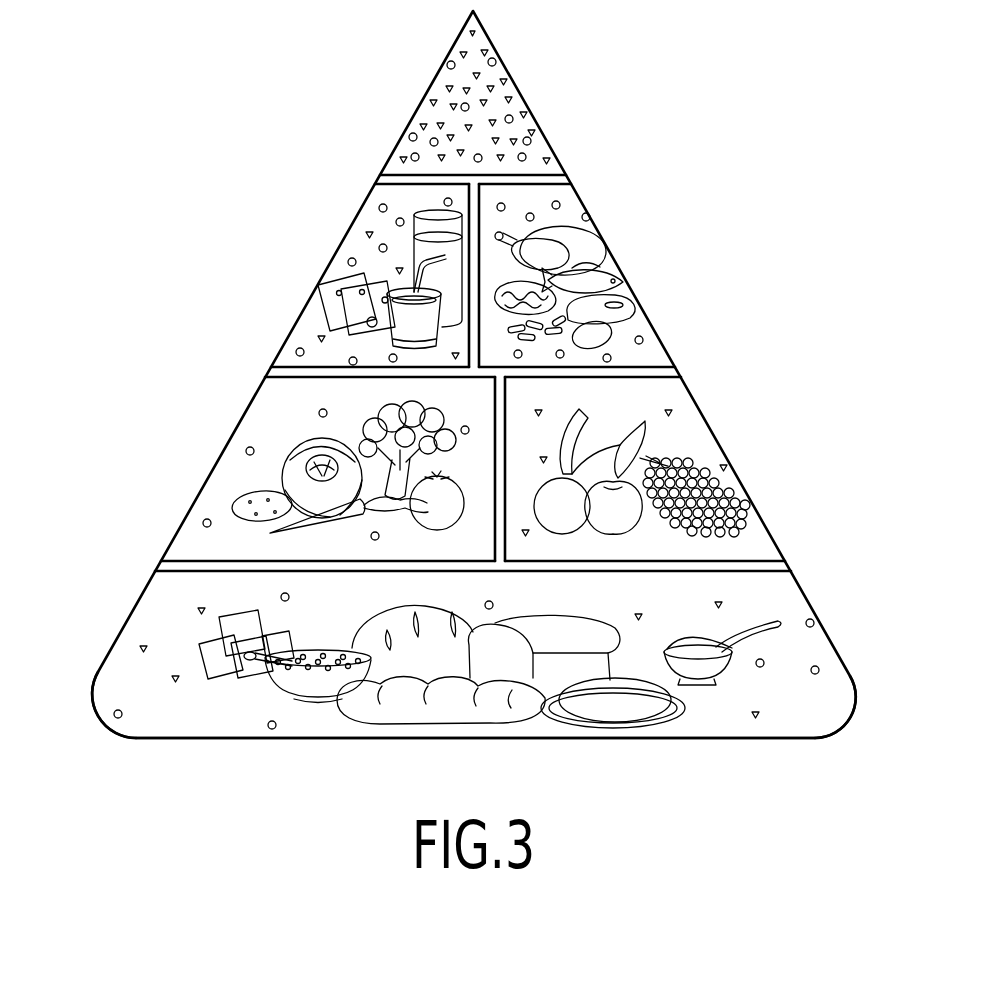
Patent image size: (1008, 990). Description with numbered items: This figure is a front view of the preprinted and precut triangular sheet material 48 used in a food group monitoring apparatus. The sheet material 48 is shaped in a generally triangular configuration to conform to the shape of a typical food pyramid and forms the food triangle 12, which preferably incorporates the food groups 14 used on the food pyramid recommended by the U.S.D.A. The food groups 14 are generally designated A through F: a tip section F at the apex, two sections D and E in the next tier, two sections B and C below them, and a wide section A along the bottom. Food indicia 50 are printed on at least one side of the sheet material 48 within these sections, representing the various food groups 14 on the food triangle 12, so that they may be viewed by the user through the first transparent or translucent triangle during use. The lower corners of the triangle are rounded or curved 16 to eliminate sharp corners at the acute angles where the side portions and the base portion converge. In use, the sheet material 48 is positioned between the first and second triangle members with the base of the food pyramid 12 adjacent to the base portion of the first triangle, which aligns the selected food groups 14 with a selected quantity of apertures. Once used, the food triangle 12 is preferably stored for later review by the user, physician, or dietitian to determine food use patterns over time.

The food triangle 12 is at (702, 340).
The food groups 14 is at (160, 718).
The rounded or curved corners 16 is at (130, 668).
The preprinted triangular sheet material 48 is at (705, 672).
The food indicia 50 is at (418, 226).
The food group designation A is at (811, 648).
The food group designation B is at (226, 482).
The food group designation C is at (698, 440).
The food group designation D is at (314, 322).
The food group designation E is at (646, 324).
The food group designation F is at (497, 101).